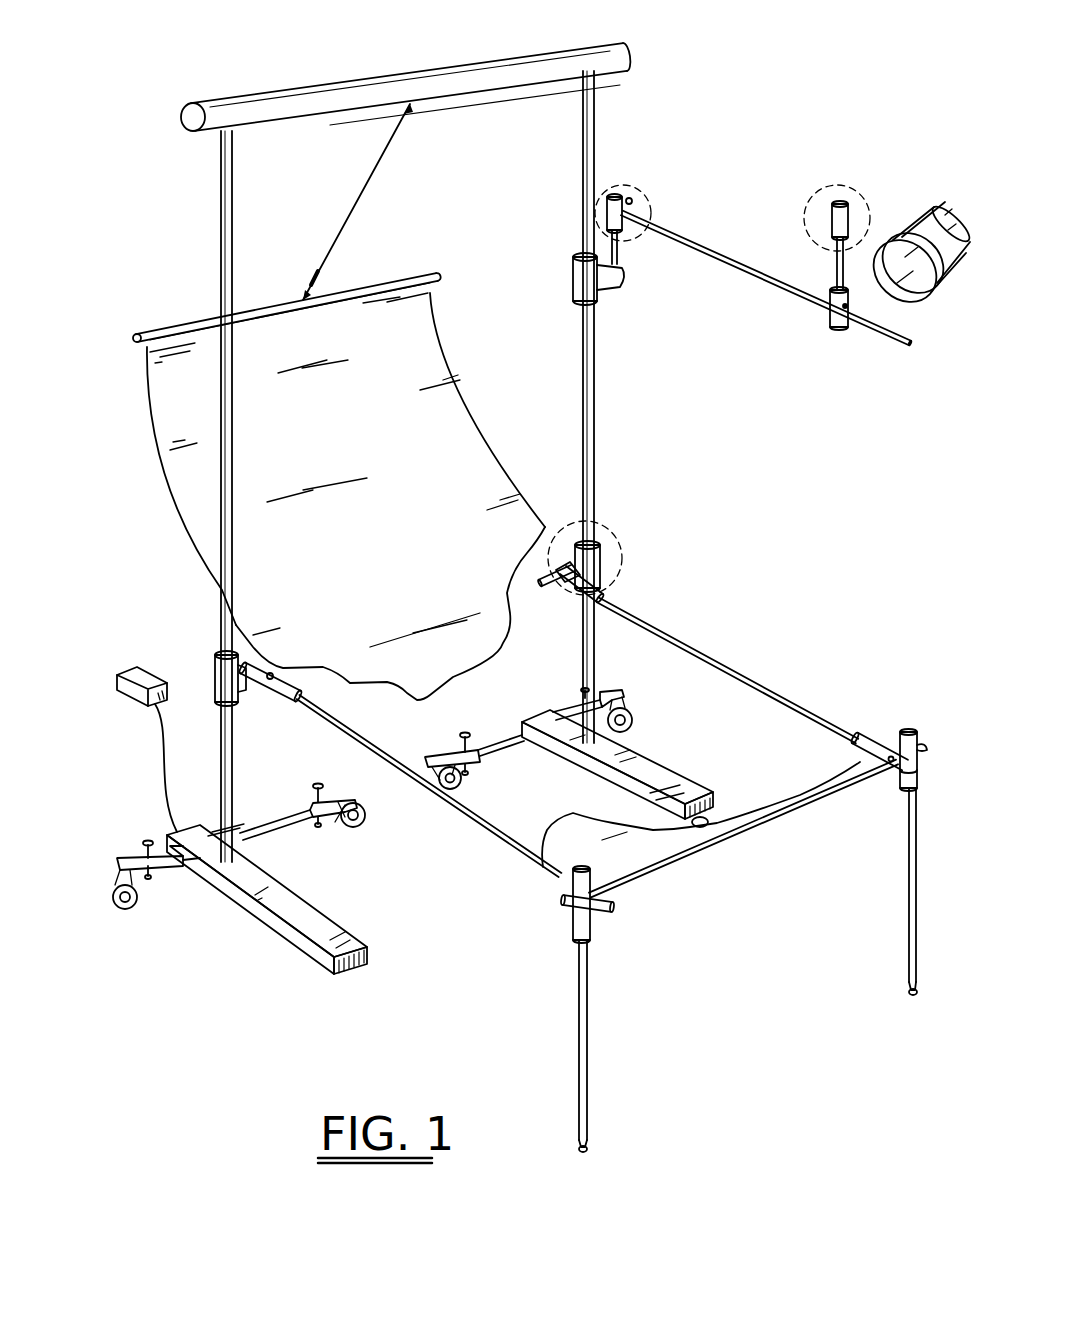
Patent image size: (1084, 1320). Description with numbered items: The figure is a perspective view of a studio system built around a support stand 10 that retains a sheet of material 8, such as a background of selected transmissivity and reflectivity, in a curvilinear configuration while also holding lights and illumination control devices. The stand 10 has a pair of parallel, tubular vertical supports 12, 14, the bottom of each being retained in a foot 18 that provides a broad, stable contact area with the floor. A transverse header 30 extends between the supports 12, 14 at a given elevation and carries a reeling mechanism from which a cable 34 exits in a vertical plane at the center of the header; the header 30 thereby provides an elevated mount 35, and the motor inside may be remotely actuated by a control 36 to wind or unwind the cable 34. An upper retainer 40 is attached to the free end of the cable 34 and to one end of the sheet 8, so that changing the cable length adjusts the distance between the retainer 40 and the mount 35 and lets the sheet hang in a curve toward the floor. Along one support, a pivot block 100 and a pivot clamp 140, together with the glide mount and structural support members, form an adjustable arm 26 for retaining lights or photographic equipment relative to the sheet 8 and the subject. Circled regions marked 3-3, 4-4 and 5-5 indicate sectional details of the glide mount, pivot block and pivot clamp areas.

The sheet of material 8 is at (176, 501).
The support stand 10 is at (631, 409).
The vertical support 12 is at (220, 172).
The vertical support 14 is at (595, 122).
The foot 18 is at (243, 925).
The adjustable arm 26 is at (761, 286).
The transverse header 30 is at (420, 61).
The cable 34 is at (359, 200).
The elevated mount 35 is at (414, 110).
The control 36 is at (147, 749).
The upper retainer 40 is at (427, 275).
The pivot block 100 is at (818, 197).
The pivot clamp 140 is at (628, 210).
The section line 3-3 is at (620, 532).
The section line 4-4 is at (845, 192).
The section line 5-5 is at (626, 180).